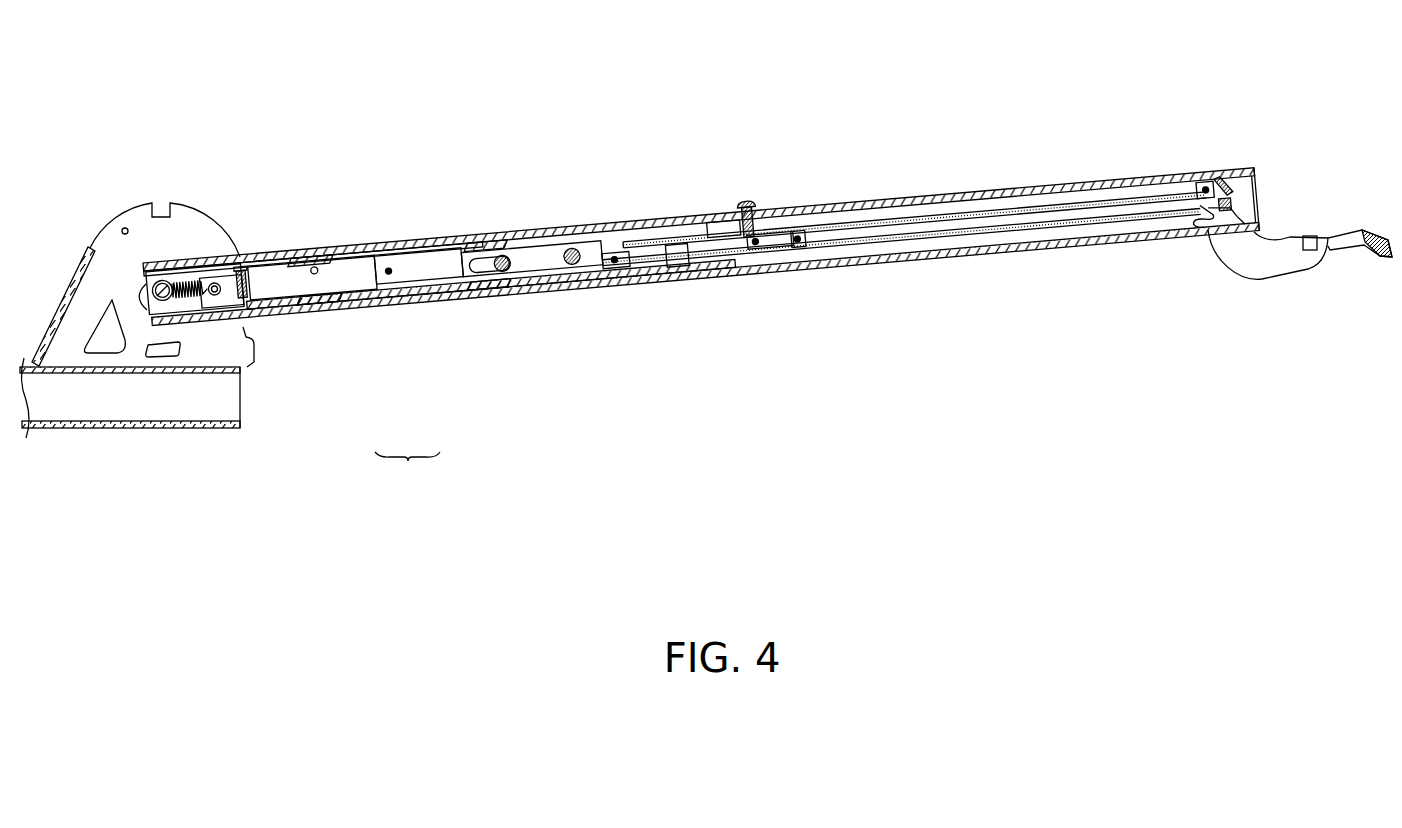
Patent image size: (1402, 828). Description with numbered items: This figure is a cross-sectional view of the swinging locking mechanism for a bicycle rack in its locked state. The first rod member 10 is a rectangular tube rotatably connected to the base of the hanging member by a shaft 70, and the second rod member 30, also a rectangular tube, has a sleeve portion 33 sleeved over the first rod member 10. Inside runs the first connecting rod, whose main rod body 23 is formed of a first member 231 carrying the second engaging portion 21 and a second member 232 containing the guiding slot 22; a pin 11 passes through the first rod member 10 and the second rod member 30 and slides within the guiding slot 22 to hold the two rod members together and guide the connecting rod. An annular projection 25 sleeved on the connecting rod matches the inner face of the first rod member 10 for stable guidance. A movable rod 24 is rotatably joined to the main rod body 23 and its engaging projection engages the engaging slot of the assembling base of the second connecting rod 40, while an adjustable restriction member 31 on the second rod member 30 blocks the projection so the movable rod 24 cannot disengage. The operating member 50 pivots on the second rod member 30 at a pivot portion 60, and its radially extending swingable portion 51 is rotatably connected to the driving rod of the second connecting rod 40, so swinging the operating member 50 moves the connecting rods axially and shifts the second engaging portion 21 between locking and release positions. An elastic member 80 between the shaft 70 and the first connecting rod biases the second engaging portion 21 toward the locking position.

The first rod member 10 is at (450, 237).
The pin 11 is at (572, 250).
The second engaging portion 21 is at (255, 284).
The guiding slot 22 is at (531, 264).
The main rod body 23 is at (407, 469).
The first member 231 is at (346, 283).
The second member 232 is at (441, 280).
The movable rod 24 is at (682, 258).
The annular projection 25 is at (313, 265).
The second rod member 30 is at (990, 191).
The restriction member 31 is at (748, 205).
The sleeve portion 33 is at (677, 224).
The second connecting rod 40 is at (968, 232).
The operating member 50 is at (1290, 265).
The swingable portion 51 is at (1212, 178).
The pivot portion 60 is at (1248, 206).
The shaft 70 is at (148, 272).
The elastic member 80 is at (186, 282).